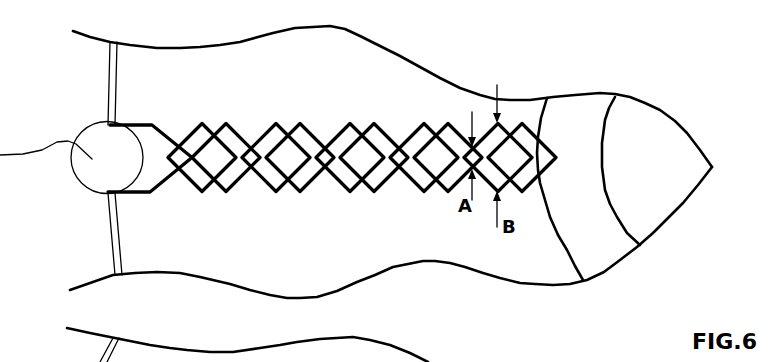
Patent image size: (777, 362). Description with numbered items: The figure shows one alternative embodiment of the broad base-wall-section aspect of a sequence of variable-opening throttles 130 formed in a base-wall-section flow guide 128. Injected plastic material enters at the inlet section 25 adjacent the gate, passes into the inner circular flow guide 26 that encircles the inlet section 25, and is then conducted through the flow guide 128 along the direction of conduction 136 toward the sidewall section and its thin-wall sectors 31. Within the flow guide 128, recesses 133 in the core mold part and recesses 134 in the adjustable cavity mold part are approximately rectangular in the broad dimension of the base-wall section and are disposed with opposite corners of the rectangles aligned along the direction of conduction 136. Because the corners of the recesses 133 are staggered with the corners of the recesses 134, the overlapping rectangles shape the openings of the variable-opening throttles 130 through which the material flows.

The inlet section 25 is at (647, 151).
The inner circular flow guide 26 is at (566, 152).
The thin-wall sector 31 is at (82, 158).
The flow guide 128 is at (332, 155).
The variable-opening throttles 130 is at (284, 189).
The recesses within the core mold part 133 is at (220, 121).
The recesses within the adjustable cavity mold part 134 is at (203, 189).
The direction of conduction 136 is at (330, 99).